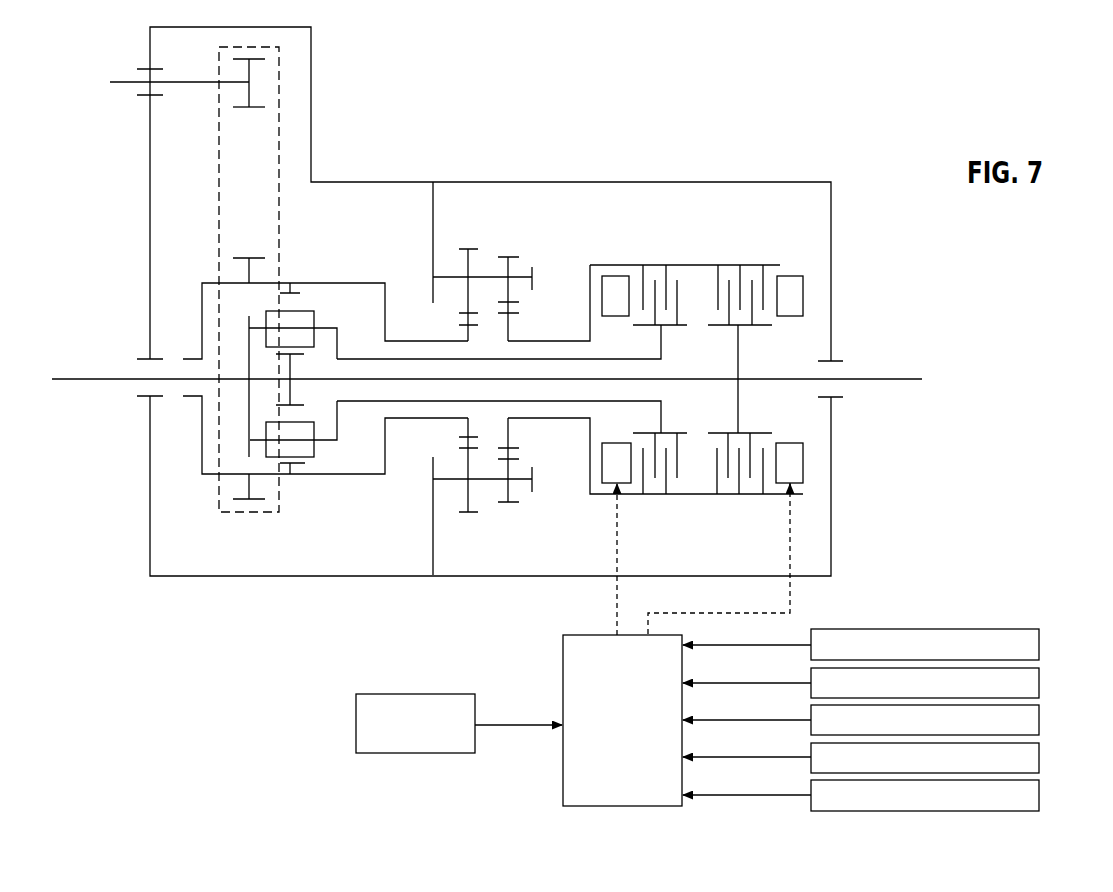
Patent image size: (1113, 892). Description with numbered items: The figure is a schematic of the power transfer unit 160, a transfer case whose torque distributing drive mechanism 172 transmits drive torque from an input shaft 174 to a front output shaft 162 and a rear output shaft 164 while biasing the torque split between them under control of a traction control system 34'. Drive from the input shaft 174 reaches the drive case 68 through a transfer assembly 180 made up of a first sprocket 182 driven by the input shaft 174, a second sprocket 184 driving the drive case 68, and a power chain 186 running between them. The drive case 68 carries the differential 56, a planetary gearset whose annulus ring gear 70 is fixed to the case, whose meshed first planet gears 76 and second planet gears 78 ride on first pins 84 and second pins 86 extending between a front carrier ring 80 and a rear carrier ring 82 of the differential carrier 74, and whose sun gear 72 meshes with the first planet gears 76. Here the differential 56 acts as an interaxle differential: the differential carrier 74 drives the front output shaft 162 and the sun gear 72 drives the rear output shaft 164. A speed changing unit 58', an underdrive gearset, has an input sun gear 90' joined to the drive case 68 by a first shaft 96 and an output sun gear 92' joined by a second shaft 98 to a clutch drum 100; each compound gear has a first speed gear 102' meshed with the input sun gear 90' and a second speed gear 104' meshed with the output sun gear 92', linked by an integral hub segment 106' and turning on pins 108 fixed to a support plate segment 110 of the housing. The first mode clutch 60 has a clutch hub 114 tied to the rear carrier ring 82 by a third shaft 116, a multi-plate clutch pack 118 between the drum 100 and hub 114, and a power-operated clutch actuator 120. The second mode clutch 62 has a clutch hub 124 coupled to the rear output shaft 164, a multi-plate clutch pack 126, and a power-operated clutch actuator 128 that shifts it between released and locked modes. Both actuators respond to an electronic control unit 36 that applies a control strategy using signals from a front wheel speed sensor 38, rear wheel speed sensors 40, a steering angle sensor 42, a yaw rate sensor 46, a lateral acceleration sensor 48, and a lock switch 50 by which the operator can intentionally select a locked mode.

The traction control system 34' is at (481, 783).
The electronic control unit 36 is at (573, 662).
The front wheel speed sensor 38 is at (1041, 648).
The rear wheel speed sensor 40 is at (1041, 685).
The steering angle sensor 42 is at (1041, 722).
The yaw rate sensor 46 is at (1041, 759).
The lateral acceleration sensor 48 is at (1041, 797).
The lock switch 50 is at (365, 712).
The differential 56 is at (327, 490).
The speed changing unit 58' is at (534, 176).
The first mode clutch 60 is at (648, 258).
The second mode clutch 62 is at (757, 255).
The drive case 68 is at (325, 283).
The annulus ring gear 70 is at (290, 474).
The sun gear 72 is at (294, 386).
The differential carrier 74 is at (247, 334).
The first planet gears 76 is at (310, 318).
The second planet gears 78 is at (310, 445).
The front carrier ring 80 is at (249, 409).
The rear carrier ring 82 is at (338, 350).
The first pins 84 is at (261, 330).
The second pins 86 is at (262, 440).
The input sun gear 90' is at (479, 457).
The output sun gear 92' is at (528, 460).
The first shaft 96 is at (403, 341).
The second shaft 98 is at (553, 341).
The clutch drum 100 is at (693, 264).
The first speed gear 102' is at (478, 277).
The second speed gear 104' is at (533, 284).
The integral hub segment 106' is at (512, 524).
The pins 108 is at (520, 481).
The support plate segment 110 is at (433, 215).
The clutch hub 114 is at (663, 340).
The third shaft 116 is at (495, 362).
The multi-plate clutch pack 118 is at (672, 466).
The power-operated clutch actuator 120 is at (616, 282).
The clutch hub 124 is at (740, 350).
The multi-plate clutch pack 126 is at (740, 477).
The power-operated clutch actuator 128 is at (795, 292).
The power transfer unit 160 is at (718, 50).
The front output shaft 162 is at (73, 378).
The rear output shaft 164 is at (887, 378).
The torque distributing drive mechanism 172 is at (720, 128).
The input shaft 174 is at (120, 81).
The transfer assembly 180 is at (266, 168).
The first sprocket 182 is at (243, 108).
The second sprocket 184 is at (243, 500).
The power chain 186 is at (267, 80).